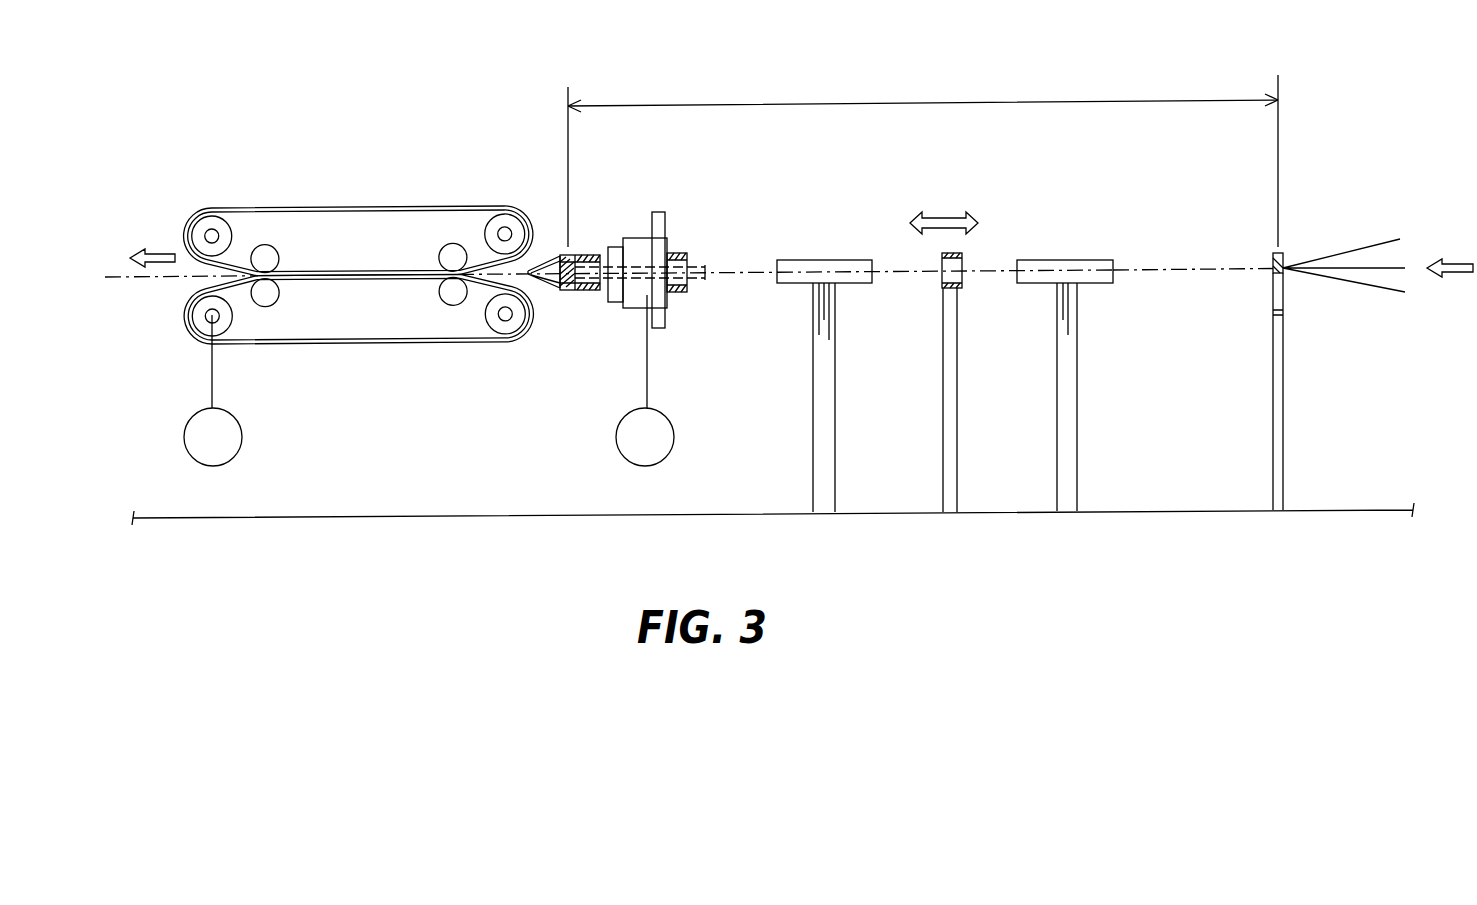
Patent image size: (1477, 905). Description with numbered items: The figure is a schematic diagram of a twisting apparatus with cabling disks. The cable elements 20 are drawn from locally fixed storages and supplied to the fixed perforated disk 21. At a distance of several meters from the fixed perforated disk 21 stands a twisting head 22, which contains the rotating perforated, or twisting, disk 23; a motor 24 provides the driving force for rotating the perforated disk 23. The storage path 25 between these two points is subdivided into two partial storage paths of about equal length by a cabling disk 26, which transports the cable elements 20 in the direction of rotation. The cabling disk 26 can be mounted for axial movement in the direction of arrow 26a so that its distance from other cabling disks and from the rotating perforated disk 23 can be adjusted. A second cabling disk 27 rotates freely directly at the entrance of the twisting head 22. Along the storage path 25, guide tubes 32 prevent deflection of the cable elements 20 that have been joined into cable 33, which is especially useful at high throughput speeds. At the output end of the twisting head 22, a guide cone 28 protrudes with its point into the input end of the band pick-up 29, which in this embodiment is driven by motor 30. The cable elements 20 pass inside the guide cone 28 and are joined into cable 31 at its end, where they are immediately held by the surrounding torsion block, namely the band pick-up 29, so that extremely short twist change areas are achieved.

The cable elements 20 is at (1394, 268).
The fixed perforated disk 21 is at (1288, 252).
The twisting head 22 is at (636, 248).
The rotating perforated disk 23 is at (573, 290).
The motor 24 is at (675, 436).
The storage path 25 is at (917, 103).
The cabling disk 26 is at (962, 280).
The arrow 26a is at (935, 232).
The second cabling disk 27 is at (689, 284).
The guide cone 28 is at (558, 318).
The band pick-up 29 is at (376, 207).
The motor 30 is at (243, 411).
The cable 31 is at (115, 268).
The guide tubes 32 is at (840, 257).
The cable 33 is at (1185, 265).